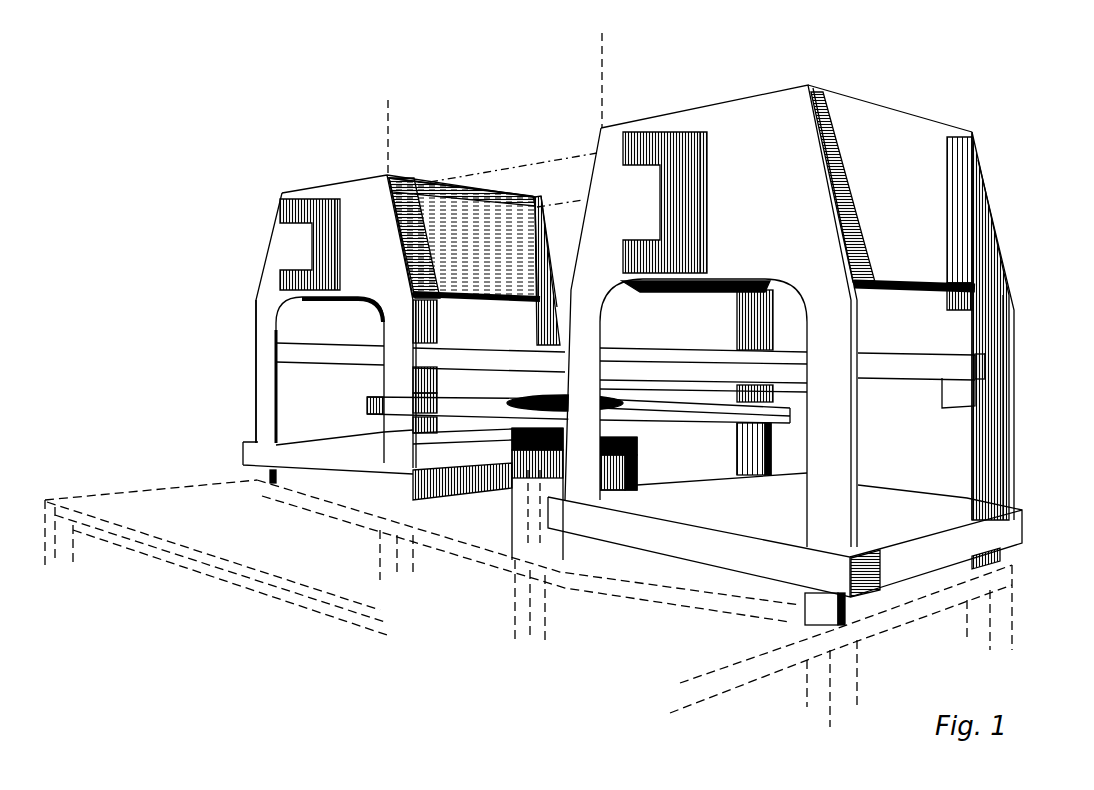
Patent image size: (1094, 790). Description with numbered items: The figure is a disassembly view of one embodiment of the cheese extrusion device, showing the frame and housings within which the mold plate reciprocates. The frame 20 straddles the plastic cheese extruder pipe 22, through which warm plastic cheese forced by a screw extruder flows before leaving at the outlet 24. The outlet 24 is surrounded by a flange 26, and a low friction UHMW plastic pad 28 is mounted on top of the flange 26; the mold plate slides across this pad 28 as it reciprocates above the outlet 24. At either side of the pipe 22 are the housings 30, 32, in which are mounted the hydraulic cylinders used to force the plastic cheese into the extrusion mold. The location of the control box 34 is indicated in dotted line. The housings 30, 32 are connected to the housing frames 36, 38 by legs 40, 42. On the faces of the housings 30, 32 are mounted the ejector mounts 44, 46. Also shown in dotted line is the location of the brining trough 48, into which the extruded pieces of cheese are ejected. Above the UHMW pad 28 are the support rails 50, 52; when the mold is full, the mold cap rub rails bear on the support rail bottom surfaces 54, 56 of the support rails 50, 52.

The frame 20 is at (922, 167).
The plastic cheese extruder pipe 22 is at (637, 453).
The outlet 24 is at (483, 396).
The flange 26 is at (697, 430).
The UHMW plastic pad 28 is at (703, 420).
The housing 30 is at (352, 178).
The housing 32 is at (900, 113).
The control box 34 is at (602, 113).
The housing frame 36 is at (322, 470).
The housing frame 38 is at (943, 531).
The legs 40 is at (347, 453).
The legs 42 is at (582, 468).
The ejector mount 44 is at (292, 203).
The ejector mount 46 is at (645, 142).
The brining trough 48 is at (208, 542).
The support rail 50 is at (367, 355).
The support rail 52 is at (943, 367).
The support rail bottom surface 54 is at (328, 365).
The support rail bottom surface 56 is at (943, 407).